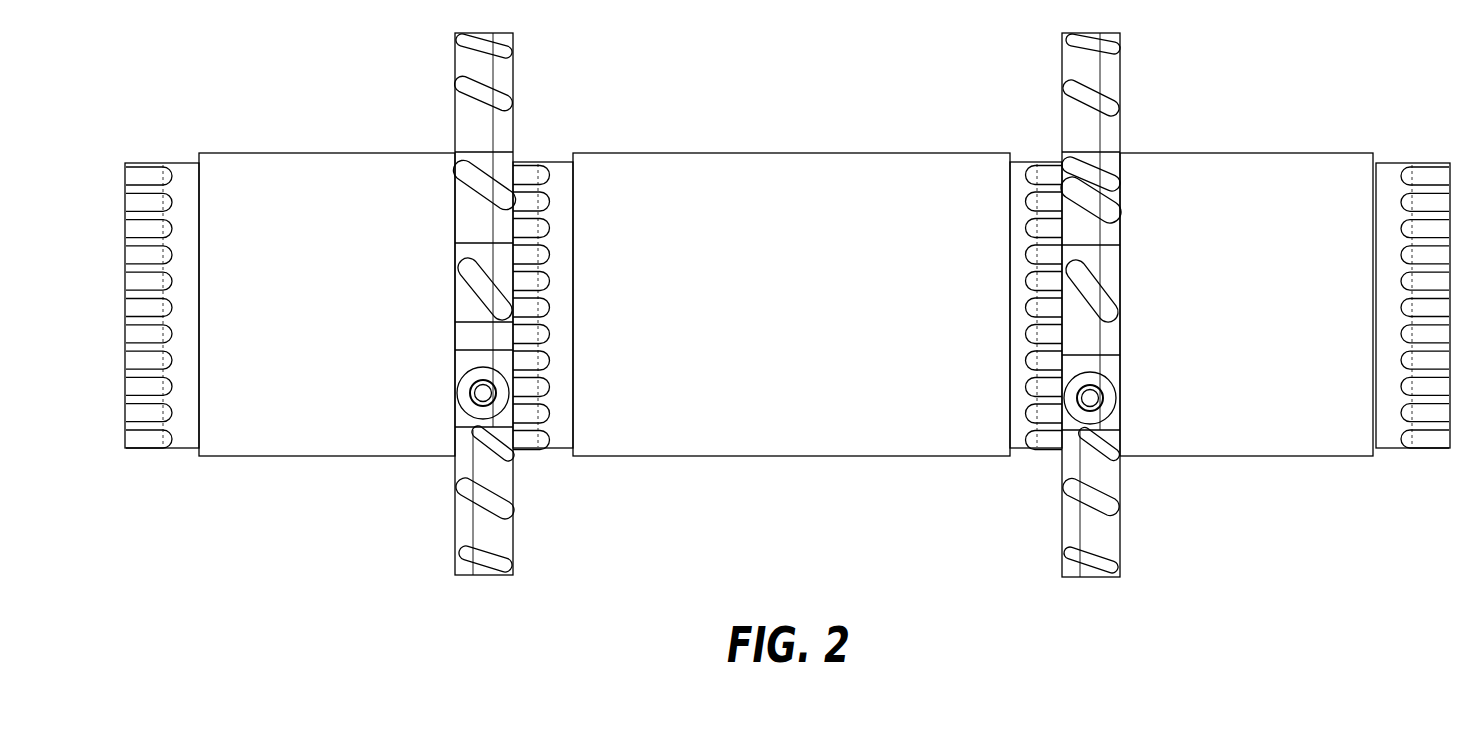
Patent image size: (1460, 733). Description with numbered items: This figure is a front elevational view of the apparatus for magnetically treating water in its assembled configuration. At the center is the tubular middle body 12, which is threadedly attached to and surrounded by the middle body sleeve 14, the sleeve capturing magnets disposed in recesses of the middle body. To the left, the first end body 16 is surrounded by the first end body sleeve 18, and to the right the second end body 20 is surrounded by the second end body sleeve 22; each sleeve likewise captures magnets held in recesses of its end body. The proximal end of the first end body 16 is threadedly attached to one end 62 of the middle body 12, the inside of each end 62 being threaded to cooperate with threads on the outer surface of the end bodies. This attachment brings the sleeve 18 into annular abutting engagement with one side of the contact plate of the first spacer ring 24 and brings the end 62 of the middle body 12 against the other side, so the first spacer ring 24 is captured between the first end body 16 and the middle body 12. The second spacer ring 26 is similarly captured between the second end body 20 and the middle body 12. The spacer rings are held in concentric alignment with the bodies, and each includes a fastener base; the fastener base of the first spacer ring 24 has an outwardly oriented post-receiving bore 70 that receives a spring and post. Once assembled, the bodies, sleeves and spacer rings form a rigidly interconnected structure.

The tubular middle body 12 is at (553, 450).
The middle body sleeve 14 is at (727, 457).
The first end body 16 is at (181, 449).
The first end body sleeve 18 is at (310, 457).
The second end body 20 is at (1384, 449).
The second end body sleeve 22 is at (1264, 457).
The first spacer ring 24 is at (488, 577).
The second spacer ring 26 is at (1095, 578).
The end of middle body 62 is at (533, 140).
The post-receiving bore 70 is at (478, 398).